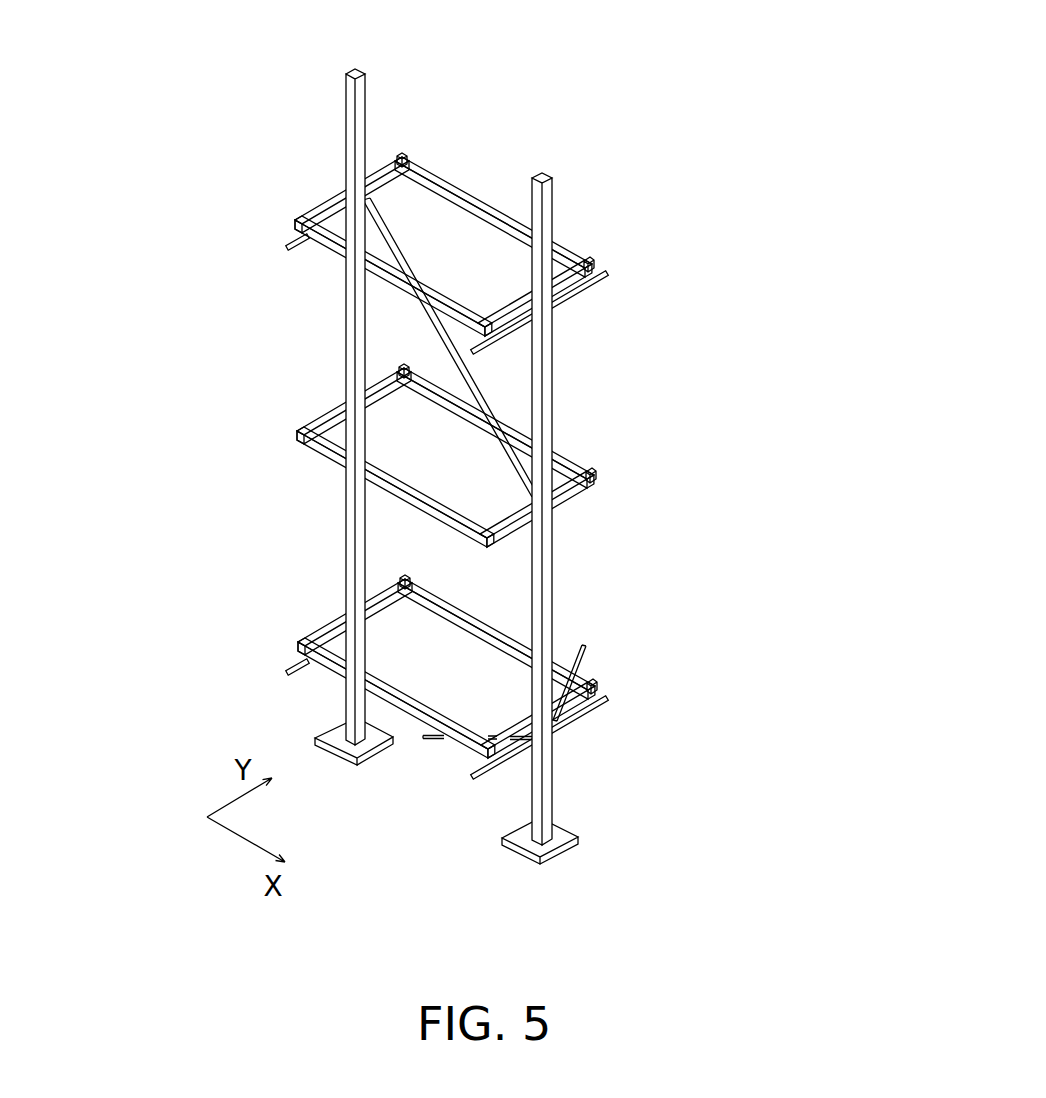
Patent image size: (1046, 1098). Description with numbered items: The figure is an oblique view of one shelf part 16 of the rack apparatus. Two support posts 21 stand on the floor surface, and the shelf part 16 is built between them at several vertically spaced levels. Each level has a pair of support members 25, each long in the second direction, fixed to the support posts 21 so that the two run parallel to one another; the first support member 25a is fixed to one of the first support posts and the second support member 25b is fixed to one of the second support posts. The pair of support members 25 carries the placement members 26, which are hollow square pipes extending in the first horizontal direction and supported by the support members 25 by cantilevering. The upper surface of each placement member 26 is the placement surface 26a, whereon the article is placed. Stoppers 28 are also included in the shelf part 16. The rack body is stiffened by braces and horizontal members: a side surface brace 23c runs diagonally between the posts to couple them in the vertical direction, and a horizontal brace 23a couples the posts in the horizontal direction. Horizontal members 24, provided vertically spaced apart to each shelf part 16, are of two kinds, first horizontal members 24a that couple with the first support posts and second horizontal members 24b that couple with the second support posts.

The shelf part 16 is at (327, 188).
The support post 21 is at (439, 435).
The horizontal brace 23a is at (423, 740).
The side surface brace 23c is at (412, 170).
The horizontal member 24 is at (597, 730).
The first horizontal member 24a is at (580, 293).
The second horizontal member 24b is at (297, 660).
The support member 25 is at (467, 403).
The first support member 25a is at (563, 449).
The second support member 25b is at (370, 180).
The placement member 26 is at (390, 406).
The placement surface 26a is at (477, 195).
The stopper 28 is at (404, 153).